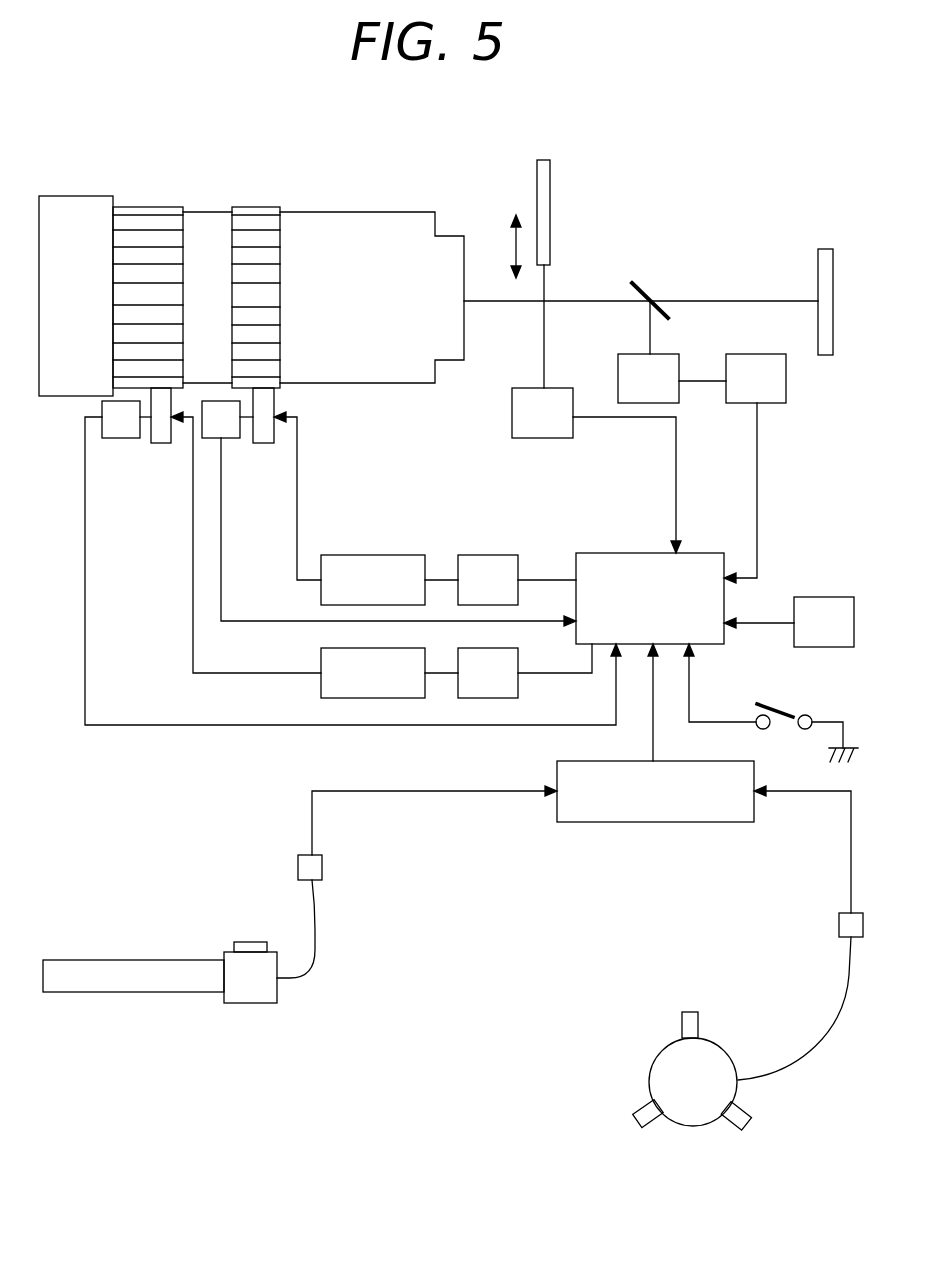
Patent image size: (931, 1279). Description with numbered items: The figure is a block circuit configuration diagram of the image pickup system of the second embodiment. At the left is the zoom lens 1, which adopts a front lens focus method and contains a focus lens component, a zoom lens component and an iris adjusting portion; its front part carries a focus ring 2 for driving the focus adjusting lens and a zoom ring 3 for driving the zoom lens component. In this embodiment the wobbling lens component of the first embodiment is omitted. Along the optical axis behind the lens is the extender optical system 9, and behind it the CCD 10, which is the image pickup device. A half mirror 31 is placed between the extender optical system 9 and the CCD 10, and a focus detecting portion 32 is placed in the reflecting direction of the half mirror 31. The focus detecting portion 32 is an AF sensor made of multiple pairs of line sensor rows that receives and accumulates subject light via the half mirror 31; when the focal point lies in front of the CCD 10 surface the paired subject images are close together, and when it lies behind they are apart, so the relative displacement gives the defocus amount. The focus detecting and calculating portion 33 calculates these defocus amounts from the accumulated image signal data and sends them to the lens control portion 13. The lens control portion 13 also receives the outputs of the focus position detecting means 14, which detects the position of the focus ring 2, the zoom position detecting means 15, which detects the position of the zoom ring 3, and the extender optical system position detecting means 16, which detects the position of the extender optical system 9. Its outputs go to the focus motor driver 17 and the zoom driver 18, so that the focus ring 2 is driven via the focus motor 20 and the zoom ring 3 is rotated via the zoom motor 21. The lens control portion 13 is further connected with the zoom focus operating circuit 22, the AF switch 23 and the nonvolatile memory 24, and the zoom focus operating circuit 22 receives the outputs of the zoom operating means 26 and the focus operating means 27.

The zoom lens 1 is at (305, 212).
The focus ring 2 is at (148, 245).
The zoom ring 3 is at (255, 240).
The extender optical system 9 is at (545, 165).
The CCD 10 is at (828, 252).
The lens control portion 13 is at (612, 565).
The focus position detecting means 14 is at (121, 430).
The zoom position detecting means 15 is at (232, 430).
The extender optical system position detecting means 16 is at (518, 418).
The focus motor driver 17 is at (487, 688).
The zoom driver 18 is at (487, 565).
The focus motor 20 is at (373, 688).
The zoom motor 21 is at (370, 562).
The zoom focus operating circuit 22 is at (655, 810).
The AF switch 23 is at (783, 712).
The nonvolatile memory 24 is at (822, 607).
The zoom operating means 26 is at (134, 985).
The focus operating means 27 is at (693, 1112).
The half mirror 31 is at (651, 295).
The focus detecting portion 32 is at (672, 392).
The focus detecting and calculating portion 33 is at (778, 388).